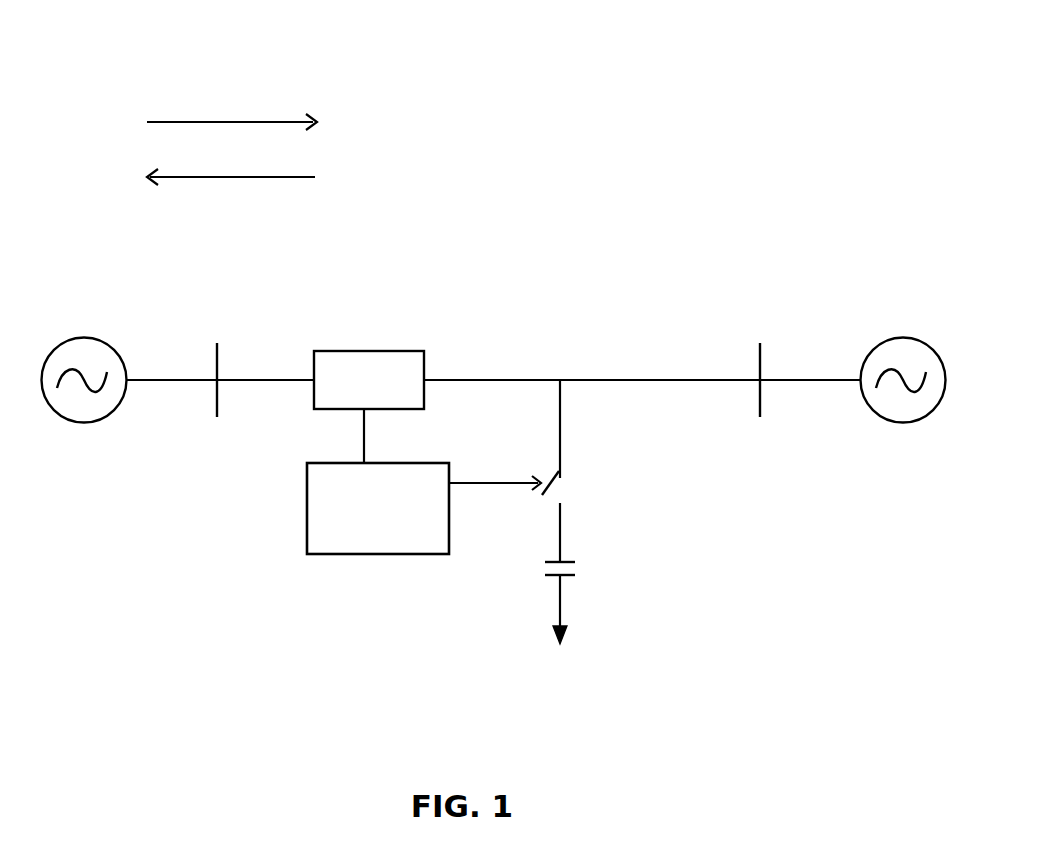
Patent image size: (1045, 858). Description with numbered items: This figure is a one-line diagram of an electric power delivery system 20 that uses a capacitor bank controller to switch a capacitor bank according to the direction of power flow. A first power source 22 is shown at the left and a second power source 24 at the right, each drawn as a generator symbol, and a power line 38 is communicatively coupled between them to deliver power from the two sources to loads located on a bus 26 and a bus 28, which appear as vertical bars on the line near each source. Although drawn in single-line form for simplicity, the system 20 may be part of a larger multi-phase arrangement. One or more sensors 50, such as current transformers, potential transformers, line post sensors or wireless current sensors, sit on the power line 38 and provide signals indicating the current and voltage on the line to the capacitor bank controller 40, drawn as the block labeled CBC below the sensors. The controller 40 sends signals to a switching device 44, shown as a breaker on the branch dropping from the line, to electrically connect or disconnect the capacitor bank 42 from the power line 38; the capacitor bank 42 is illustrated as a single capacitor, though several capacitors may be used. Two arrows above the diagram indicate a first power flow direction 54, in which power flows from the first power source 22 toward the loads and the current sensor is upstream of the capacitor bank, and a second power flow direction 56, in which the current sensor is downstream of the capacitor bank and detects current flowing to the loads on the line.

The electric power delivery system 20 is at (650, 63).
The first power source 22 is at (73, 423).
The second power source 24 is at (906, 422).
The bus 26 is at (218, 362).
The bus 28 is at (761, 362).
The power line 38 is at (593, 378).
The capacitor bank controller 40 is at (378, 555).
The capacitor bank 42 is at (576, 560).
The switching device 44 is at (561, 484).
The sensors 50 is at (360, 351).
The first power flow direction 54 is at (216, 121).
The second power flow direction 56 is at (243, 178).